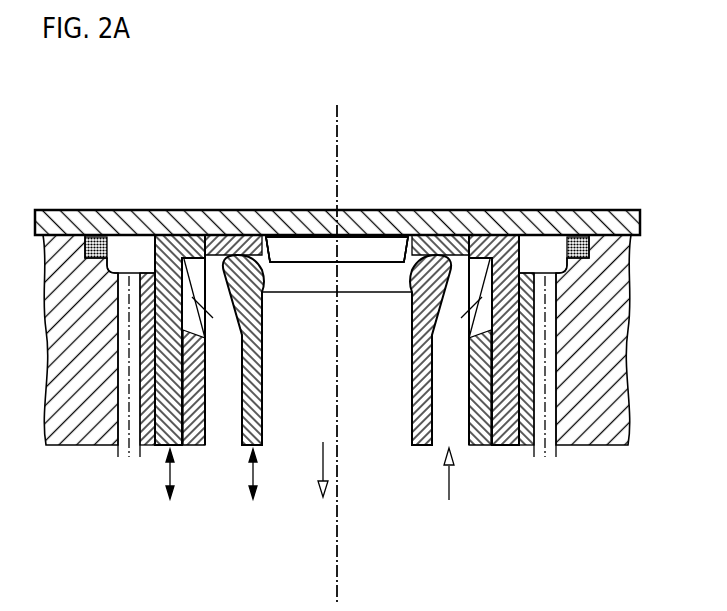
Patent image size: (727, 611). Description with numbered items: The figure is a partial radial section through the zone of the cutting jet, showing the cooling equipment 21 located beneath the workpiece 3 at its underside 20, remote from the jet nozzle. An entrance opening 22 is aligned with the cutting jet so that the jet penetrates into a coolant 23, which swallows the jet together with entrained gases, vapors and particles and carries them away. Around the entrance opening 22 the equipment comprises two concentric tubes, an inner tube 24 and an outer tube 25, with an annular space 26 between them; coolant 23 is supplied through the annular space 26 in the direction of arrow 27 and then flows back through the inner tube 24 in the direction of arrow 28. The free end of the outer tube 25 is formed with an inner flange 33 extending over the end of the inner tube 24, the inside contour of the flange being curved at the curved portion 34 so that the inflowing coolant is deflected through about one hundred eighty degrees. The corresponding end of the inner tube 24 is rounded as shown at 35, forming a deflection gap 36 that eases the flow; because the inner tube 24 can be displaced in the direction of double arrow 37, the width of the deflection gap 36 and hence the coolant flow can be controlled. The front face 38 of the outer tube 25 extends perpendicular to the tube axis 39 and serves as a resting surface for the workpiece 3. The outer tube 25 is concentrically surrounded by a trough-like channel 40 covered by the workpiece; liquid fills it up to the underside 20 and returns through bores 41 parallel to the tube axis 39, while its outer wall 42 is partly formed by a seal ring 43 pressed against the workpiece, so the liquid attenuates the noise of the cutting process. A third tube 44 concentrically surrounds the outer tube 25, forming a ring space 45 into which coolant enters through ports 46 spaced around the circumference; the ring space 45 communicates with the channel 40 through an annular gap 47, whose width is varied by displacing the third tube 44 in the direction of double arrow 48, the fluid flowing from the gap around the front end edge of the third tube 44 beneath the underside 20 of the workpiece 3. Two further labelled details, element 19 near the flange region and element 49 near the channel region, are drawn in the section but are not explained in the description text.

The workpiece 3 is at (162, 226).
The valve disc right end 19 is at (400, 236).
The underside 20 is at (422, 240).
The cooling equipment 21 is at (288, 240).
The entrance opening 22 is at (362, 240).
The coolant 23 is at (385, 440).
The inner tube 24 is at (449, 480).
The outer tube 25 is at (455, 470).
The annular space 26 is at (481, 423).
The arrow 27 is at (453, 418).
The arrow 28 is at (316, 472).
The inner flange 33 is at (262, 236).
The curved portion 34 is at (232, 236).
The rounded free end 35 is at (310, 218).
The deflection gap 36 is at (240, 252).
The double arrow 37 is at (254, 475).
The front face 38 is at (198, 236).
The tube axis 39 is at (337, 498).
The trough-like channel 40 is at (580, 240).
The bore 41 is at (123, 432).
The outer wall 42 is at (122, 240).
The seal ring 43 is at (92, 238).
The third tube 44 is at (165, 428).
The ring space 45 is at (480, 238).
The port 46 is at (480, 265).
The annular gap 47 is at (512, 236).
The double arrow 48 is at (172, 478).
The right annular chamber 49 is at (548, 240).